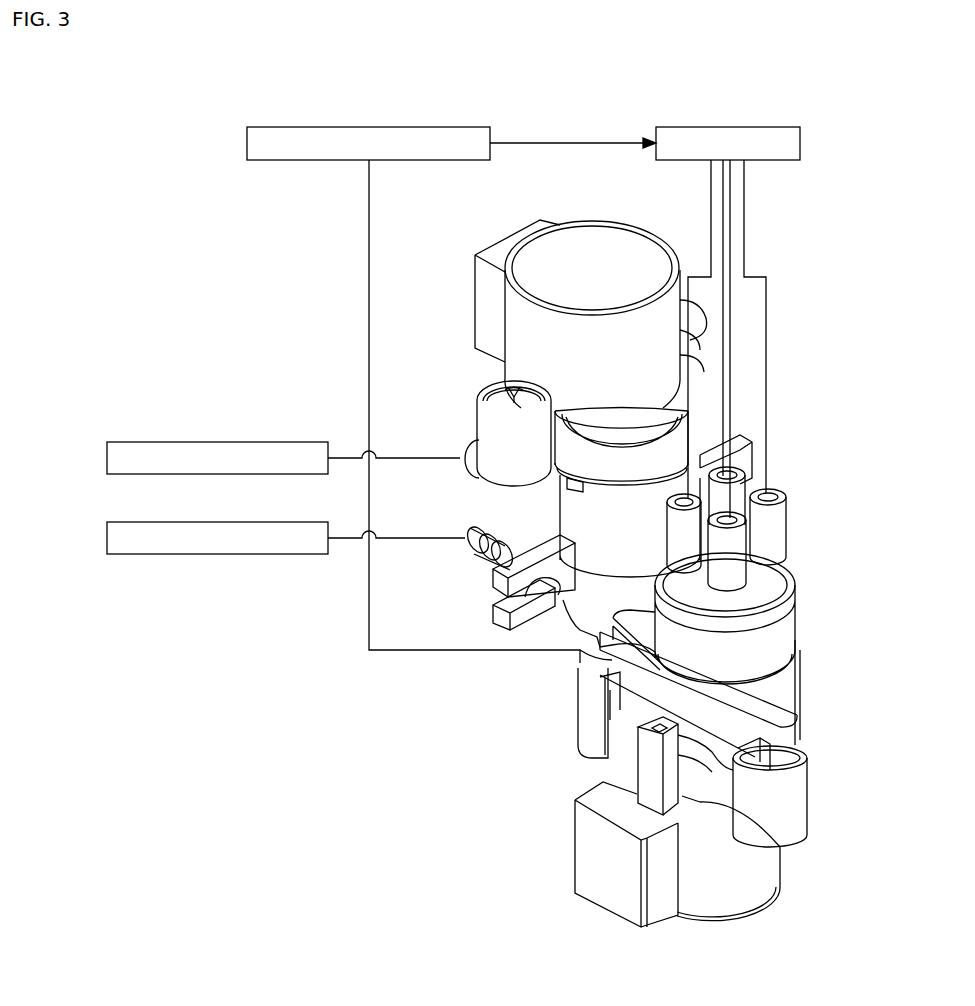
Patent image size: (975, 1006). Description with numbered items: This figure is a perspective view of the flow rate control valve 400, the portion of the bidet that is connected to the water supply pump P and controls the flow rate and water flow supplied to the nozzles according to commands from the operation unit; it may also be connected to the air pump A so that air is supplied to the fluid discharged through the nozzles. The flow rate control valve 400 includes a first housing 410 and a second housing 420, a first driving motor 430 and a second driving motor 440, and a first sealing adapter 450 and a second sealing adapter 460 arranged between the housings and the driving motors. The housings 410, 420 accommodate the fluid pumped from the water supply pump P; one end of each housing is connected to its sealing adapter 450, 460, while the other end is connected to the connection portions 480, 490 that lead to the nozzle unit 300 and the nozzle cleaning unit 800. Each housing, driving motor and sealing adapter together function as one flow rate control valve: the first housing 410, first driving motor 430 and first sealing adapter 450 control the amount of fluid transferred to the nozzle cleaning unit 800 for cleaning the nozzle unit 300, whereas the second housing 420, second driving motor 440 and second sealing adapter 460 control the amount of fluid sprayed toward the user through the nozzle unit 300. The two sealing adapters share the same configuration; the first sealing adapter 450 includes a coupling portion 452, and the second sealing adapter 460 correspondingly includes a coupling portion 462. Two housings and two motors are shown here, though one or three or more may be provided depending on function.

The nozzle cleaning unit 800 is at (367, 126).
The nozzle unit 300 is at (726, 126).
The water supply pump P is at (217, 441).
The air pump A is at (217, 521).
The flow rate control valve 400 is at (848, 441).
The first housing 410 is at (580, 505).
The second housing 420 is at (790, 678).
The first driving motor 430 is at (520, 338).
The second driving motor 440 is at (768, 863).
The first sealing adapter 450 is at (700, 433).
The coupling portion 452 is at (500, 431).
The second sealing adapter 460 is at (822, 748).
The coupling portion 462 is at (795, 815).
The connection portion 480 is at (590, 580).
The connection portion 490 is at (785, 616).